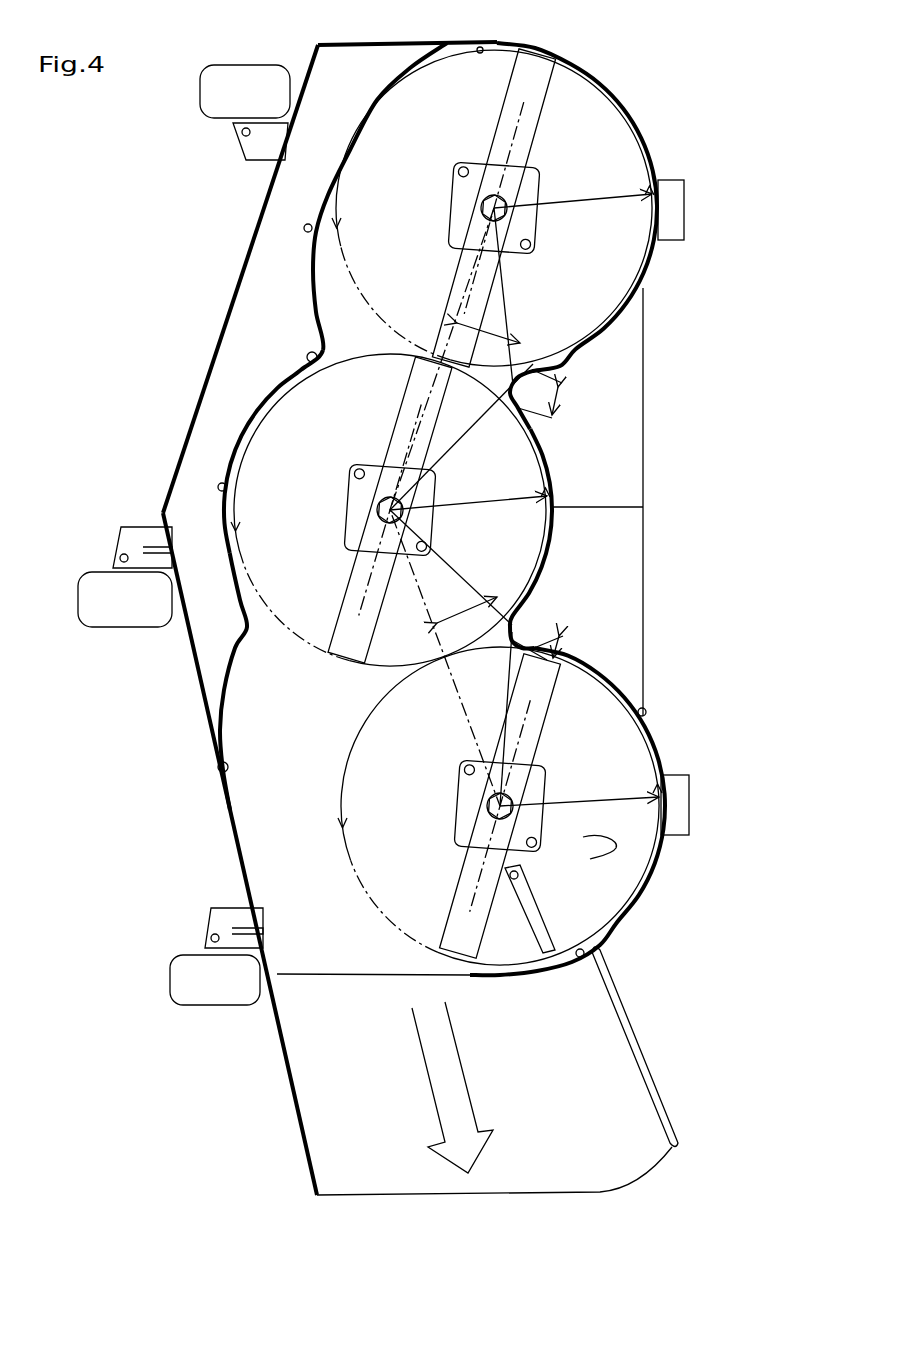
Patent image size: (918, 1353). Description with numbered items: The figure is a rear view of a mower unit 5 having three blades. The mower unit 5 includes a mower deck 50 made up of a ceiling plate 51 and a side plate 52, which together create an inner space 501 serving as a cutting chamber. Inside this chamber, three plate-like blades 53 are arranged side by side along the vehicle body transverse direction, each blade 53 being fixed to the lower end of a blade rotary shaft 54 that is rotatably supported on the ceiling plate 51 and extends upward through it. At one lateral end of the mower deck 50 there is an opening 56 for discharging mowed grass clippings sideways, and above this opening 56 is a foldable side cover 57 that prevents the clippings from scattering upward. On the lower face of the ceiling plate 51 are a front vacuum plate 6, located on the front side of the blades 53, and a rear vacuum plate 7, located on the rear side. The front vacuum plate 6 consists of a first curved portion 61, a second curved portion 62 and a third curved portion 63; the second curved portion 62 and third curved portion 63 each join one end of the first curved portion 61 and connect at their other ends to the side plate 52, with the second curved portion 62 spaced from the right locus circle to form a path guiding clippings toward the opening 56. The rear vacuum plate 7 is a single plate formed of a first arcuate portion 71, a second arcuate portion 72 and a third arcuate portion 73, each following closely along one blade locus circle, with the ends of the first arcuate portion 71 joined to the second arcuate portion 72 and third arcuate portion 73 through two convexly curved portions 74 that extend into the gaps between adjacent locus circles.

The mower unit 5 is at (130, 221).
The mower deck 50 is at (202, 697).
The ceiling plate 51 is at (215, 377).
The side plate 52 is at (375, 48).
The blade 53 is at (505, 111).
The blade rotary shaft 54 is at (480, 208).
The opening 56 is at (345, 986).
The side cover 57 is at (300, 1106).
The front vacuum plate 6 is at (228, 466).
The first curved portion 61 is at (266, 398).
The second curved portion 62 is at (233, 650).
The third curved portion 63 is at (306, 242).
The rear vacuum plate 7 is at (556, 537).
The first arcuate portion 71 is at (556, 479).
The second arcuate portion 72 is at (620, 680).
The third arcuate portion 73 is at (612, 348).
The convexly curved portion 74 is at (506, 389).
The inner space 501 is at (590, 859).